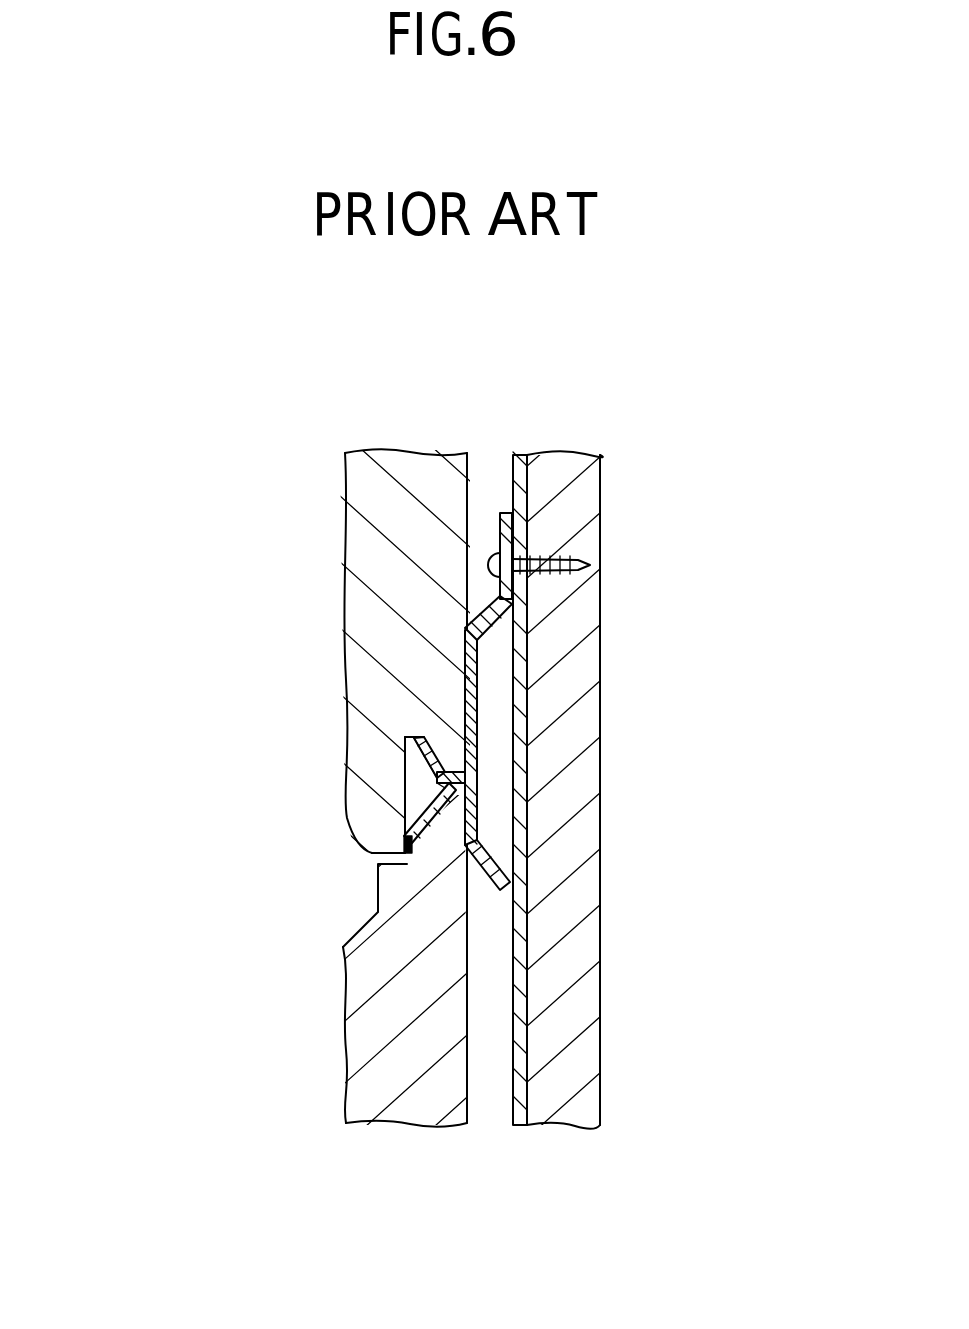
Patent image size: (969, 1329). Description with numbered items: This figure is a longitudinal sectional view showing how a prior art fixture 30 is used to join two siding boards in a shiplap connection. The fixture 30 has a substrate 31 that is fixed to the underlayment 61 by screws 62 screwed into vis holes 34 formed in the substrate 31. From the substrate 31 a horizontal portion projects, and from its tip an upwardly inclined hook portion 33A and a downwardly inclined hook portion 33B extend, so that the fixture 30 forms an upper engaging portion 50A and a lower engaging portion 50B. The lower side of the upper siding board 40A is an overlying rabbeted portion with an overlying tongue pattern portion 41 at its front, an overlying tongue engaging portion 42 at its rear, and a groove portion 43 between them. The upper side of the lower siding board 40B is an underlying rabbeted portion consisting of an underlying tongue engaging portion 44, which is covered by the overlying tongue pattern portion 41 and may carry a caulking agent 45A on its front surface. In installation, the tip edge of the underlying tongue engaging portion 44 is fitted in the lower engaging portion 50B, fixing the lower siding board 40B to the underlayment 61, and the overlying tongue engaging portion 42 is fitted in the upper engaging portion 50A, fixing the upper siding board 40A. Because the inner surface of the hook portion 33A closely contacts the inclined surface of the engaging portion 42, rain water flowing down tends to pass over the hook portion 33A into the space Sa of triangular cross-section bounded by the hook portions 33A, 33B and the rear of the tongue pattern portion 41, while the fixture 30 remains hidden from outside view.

The fixture 30 is at (483, 736).
The substrate 31 is at (449, 800).
The upwardly inclined hook portion 33A is at (405, 757).
The downwardly inclined hook portion 33B is at (408, 800).
The vis hole 34 is at (505, 547).
The upper siding board 40A is at (302, 517).
The lower siding board 40B is at (264, 1052).
The overlying tongue pattern portion 41 is at (352, 805).
The overlying tongue engaging portion 42 is at (450, 768).
The groove portion 43 is at (405, 745).
The underlying tongue engaging portion 44 is at (445, 833).
The caulking agent 45A is at (405, 855).
The upper engaging portion 50A is at (478, 668).
The lower engaging portion 50B is at (467, 818).
The underlayment 61 is at (570, 1053).
The screw 62 is at (557, 557).
The space having a triangular cross-section Sa is at (410, 780).